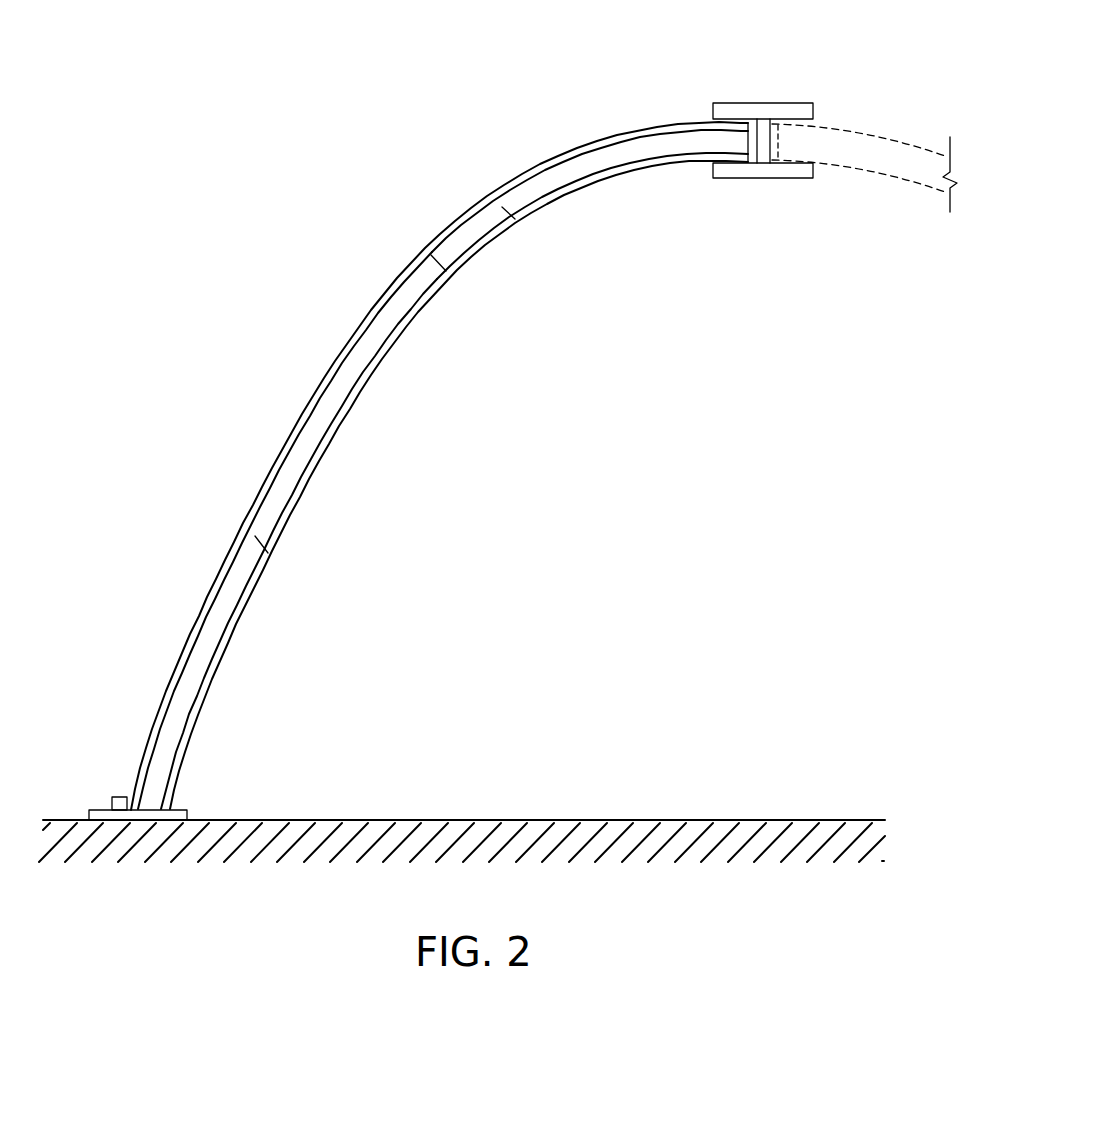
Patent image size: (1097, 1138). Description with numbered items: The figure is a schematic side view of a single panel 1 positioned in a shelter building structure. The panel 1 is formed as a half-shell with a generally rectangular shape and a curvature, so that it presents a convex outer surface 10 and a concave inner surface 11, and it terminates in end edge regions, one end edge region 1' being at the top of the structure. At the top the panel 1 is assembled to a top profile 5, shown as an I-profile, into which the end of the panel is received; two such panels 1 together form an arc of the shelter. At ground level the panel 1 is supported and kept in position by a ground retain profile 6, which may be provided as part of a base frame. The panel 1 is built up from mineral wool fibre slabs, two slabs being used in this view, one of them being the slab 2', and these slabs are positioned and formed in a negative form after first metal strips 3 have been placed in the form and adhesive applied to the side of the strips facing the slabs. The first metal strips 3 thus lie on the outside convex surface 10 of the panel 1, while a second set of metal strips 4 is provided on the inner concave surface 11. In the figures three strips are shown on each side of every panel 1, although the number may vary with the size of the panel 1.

The panel 1 is at (418, 436).
The end edge region 1' is at (697, 107).
The slab 2' is at (301, 558).
The first metal strips 3 is at (346, 353).
The second set of metal strips 4 is at (338, 420).
The top profile 5 is at (764, 110).
The ground retain profile 6 is at (104, 808).
The convex outer surface 10 is at (563, 229).
The concave inner surface 11 is at (318, 530).